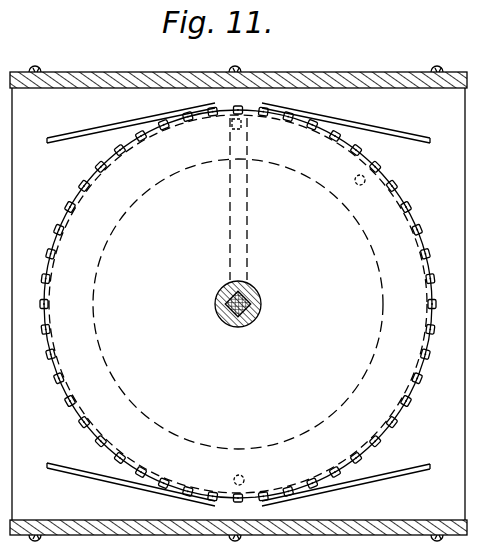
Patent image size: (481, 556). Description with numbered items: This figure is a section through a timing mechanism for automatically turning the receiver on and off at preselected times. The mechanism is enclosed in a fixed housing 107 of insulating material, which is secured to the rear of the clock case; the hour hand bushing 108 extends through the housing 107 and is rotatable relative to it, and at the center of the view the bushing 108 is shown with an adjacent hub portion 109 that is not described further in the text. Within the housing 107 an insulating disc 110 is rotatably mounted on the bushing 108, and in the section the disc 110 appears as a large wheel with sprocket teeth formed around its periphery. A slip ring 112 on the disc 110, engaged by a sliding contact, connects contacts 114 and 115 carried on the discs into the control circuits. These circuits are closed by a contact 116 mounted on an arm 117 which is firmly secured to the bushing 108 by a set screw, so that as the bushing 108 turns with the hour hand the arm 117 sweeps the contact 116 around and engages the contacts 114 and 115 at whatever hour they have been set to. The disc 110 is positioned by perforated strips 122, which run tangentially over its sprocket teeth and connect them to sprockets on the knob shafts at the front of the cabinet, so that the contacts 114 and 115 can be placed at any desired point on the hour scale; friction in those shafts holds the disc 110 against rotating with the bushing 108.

The fixed housing 107 is at (108, 86).
The hour hand bushing 108 is at (214, 302).
The hub 109 is at (262, 302).
The disc 110 is at (92, 164).
The slip rings 112 is at (187, 170).
The contact 114 is at (355, 180).
The contact 115 is at (239, 475).
The contact 116 is at (243, 126).
The arm 117 is at (250, 215).
The perforated strips 122 is at (76, 139).